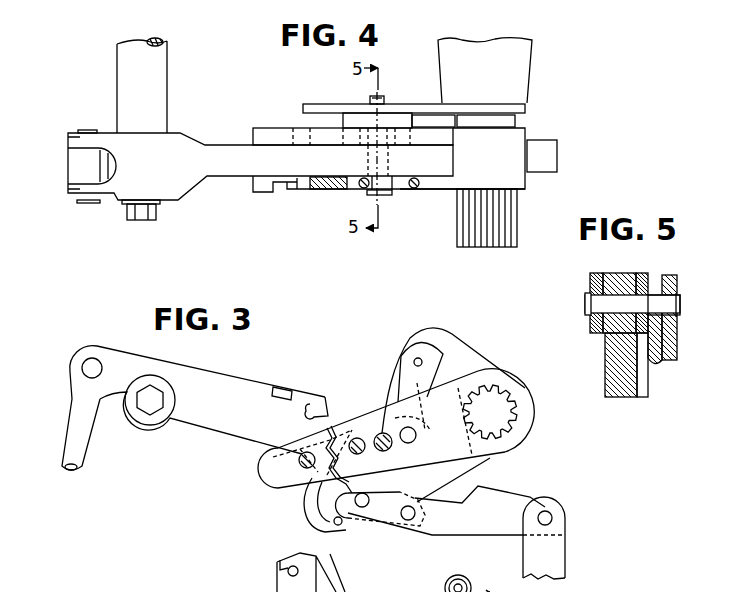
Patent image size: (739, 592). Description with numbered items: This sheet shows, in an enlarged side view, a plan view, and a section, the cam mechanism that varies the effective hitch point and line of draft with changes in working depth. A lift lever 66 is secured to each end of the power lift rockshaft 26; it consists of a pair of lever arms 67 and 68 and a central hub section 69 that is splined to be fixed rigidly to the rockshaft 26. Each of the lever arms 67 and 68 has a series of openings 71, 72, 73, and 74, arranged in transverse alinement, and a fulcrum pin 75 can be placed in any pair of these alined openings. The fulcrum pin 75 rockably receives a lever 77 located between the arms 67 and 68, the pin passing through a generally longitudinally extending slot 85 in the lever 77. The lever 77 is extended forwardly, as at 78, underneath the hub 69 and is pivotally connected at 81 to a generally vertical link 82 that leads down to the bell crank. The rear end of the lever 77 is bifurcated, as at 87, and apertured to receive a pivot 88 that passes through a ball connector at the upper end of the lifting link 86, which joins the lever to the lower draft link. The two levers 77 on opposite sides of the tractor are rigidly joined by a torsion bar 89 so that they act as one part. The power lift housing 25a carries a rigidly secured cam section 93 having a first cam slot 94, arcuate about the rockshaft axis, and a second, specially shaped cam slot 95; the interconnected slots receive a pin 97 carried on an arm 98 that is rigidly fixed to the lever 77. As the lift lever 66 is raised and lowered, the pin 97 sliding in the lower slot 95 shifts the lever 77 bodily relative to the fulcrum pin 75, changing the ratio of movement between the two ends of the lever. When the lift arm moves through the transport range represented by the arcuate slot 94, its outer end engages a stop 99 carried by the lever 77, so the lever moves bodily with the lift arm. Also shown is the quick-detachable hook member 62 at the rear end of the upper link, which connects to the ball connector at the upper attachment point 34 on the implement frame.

In FIG. 4, the power lift housing 25a is at (522, 53).
In FIG. 4, the power lift rockshaft 26 is at (510, 218).
In FIG. 3, the power lift rockshaft 26 is at (528, 420).
In FIG. 3, the upper attachment point 34 is at (288, 573).
In FIG. 3, the quick-detachable hook member 62 is at (290, 549).
In FIG. 4, the lift lever 66 is at (262, 194).
In FIG. 3, the lift lever 66 is at (256, 470).
In FIG. 4, the lever arm 67 is at (291, 190).
In FIG. 5, the lever arm 67 is at (597, 276).
In FIG. 3, the lever arm 67 is at (300, 448).
In FIG. 4, the lever arm 68 is at (264, 135).
In FIG. 5, the lever arm 68 is at (646, 278).
In FIG. 3, the lever arm 68 is at (344, 426).
In FIG. 4, the central hub section 69 is at (521, 128).
In FIG. 3, the central hub section 69 is at (503, 376).
In FIG. 4, the opening 71 is at (410, 189).
In FIG. 3, the opening 71 is at (414, 430).
In FIG. 4, the opening 72 is at (386, 178).
In FIG. 4, the opening 73 is at (360, 178).
In FIG. 3, the opening 73 is at (360, 438).
In FIG. 4, the opening 74 is at (320, 190).
In FIG. 3, the opening 74 is at (305, 468).
In FIG. 4, the fulcrum pin 75 is at (372, 194).
In FIG. 5, the fulcrum pin 75 is at (584, 303).
In FIG. 3, the fulcrum pin 75 is at (385, 452).
In FIG. 4, the lever 77 is at (219, 179).
In FIG. 5, the lever 77 is at (622, 398).
In FIG. 3, the lever 77 is at (226, 372).
In FIG. 4, the forward extension of lever 78 is at (546, 143).
In FIG. 3, the forward extension of lever 78 is at (470, 531).
In FIG. 3, the pivotal connection 81 is at (549, 516).
In FIG. 3, the link 82 is at (550, 560).
In FIG. 3, the slot 85 is at (314, 408).
In FIG. 4, the lifting link 86 is at (64, 160).
In FIG. 3, the lifting link 86 is at (68, 418).
In FIG. 4, the bifurcated rear end 87 is at (72, 136).
In FIG. 4, the pivot 88 is at (86, 130).
In FIG. 3, the pivot 88 is at (86, 365).
In FIG. 4, the torsion bar 89 is at (158, 88).
In FIG. 3, the torsion bar 89 is at (492, 589).
In FIG. 4, the cam section 93 is at (318, 103).
In FIG. 5, the cam section 93 is at (678, 340).
In FIG. 3, the cam section 93 is at (453, 337).
In FIG. 3, the first cam slot 94 is at (416, 358).
In FIG. 3, the second cam slot 95 is at (338, 525).
In FIG. 4, the pin 97 is at (385, 98).
In FIG. 5, the pin 97 is at (681, 300).
In FIG. 4, the arm 98 is at (350, 125).
In FIG. 5, the arm 98 is at (656, 362).
In FIG. 3, the arm 98 is at (425, 503).
In FIG. 3, the stop 99 is at (283, 387).